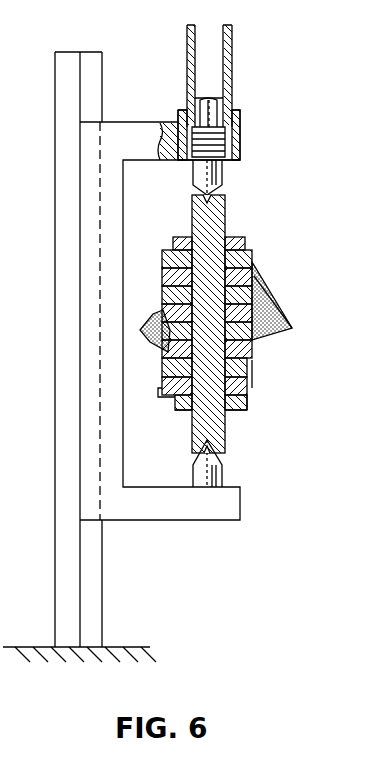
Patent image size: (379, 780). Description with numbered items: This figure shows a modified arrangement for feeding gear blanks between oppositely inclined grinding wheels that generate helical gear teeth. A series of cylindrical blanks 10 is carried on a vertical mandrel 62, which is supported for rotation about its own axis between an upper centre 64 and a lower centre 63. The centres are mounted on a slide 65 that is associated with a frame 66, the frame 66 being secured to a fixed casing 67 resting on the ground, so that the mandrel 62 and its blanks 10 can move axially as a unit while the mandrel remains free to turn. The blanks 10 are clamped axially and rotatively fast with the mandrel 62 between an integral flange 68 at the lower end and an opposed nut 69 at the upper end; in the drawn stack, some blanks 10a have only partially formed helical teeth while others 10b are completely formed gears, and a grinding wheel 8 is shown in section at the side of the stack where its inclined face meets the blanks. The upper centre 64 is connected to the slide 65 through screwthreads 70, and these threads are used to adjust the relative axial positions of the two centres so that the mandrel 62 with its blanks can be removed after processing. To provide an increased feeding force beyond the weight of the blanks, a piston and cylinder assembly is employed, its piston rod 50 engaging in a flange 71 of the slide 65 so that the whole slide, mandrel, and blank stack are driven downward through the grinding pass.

The piston rod 50 is at (228, 50).
The flange 71 is at (223, 107).
The screwthreads 70 is at (237, 137).
The centre 64 is at (207, 173).
The mandrel 62 is at (222, 215).
The nut 69 is at (243, 241).
The cylindrical blanks 10 is at (255, 277).
The blade 8 is at (273, 302).
The blanks with partially formed helical teeth 10a is at (258, 343).
The completely formed gears 10b is at (253, 378).
The integral flange 68 is at (245, 407).
The centre 63 is at (222, 472).
The slide 65 is at (158, 510).
The frame 66 is at (67, 521).
The fixed casing 67 is at (75, 659).